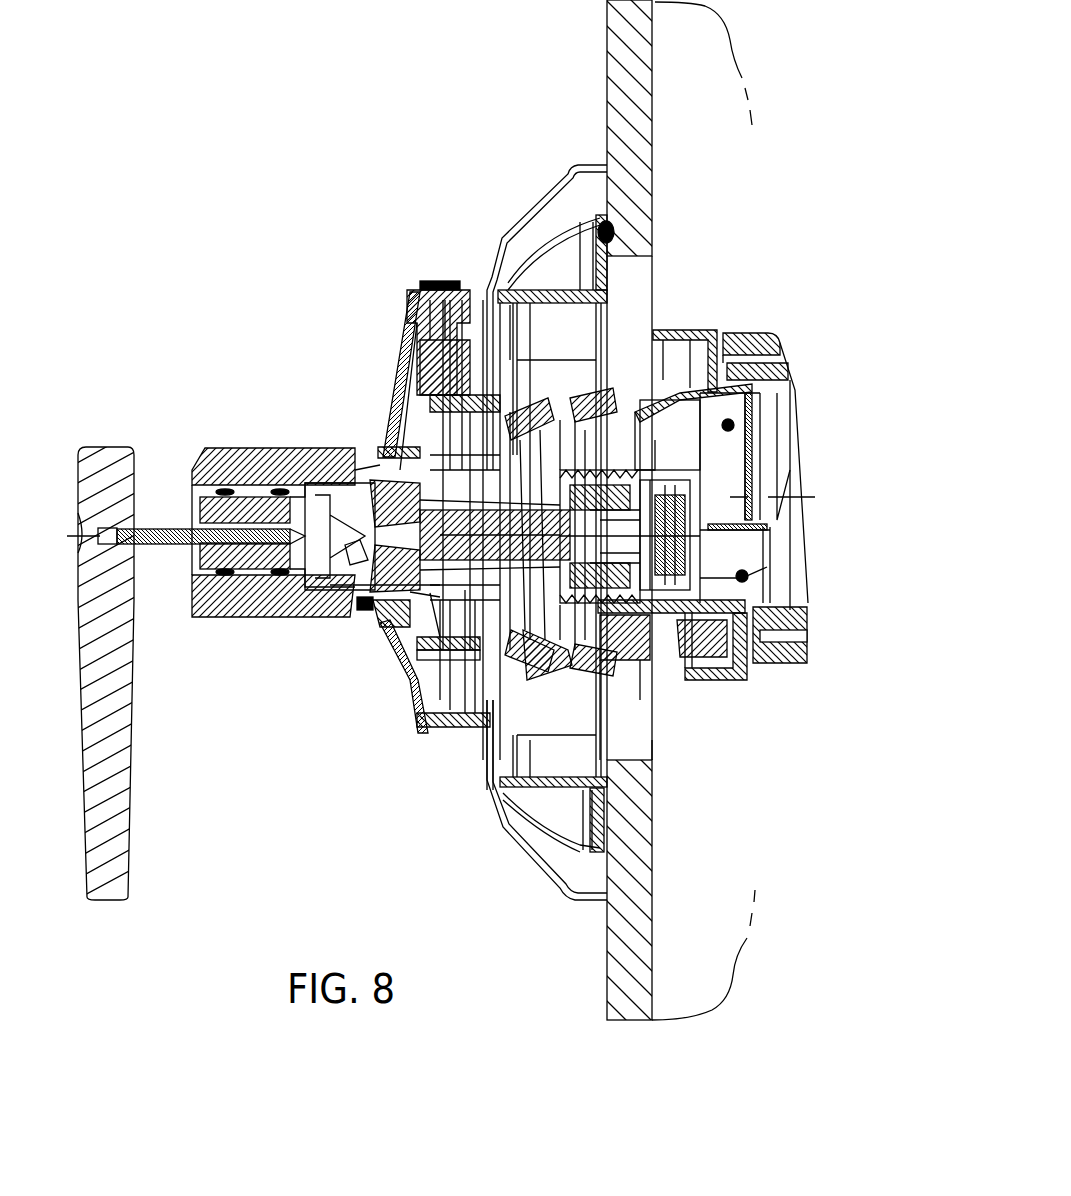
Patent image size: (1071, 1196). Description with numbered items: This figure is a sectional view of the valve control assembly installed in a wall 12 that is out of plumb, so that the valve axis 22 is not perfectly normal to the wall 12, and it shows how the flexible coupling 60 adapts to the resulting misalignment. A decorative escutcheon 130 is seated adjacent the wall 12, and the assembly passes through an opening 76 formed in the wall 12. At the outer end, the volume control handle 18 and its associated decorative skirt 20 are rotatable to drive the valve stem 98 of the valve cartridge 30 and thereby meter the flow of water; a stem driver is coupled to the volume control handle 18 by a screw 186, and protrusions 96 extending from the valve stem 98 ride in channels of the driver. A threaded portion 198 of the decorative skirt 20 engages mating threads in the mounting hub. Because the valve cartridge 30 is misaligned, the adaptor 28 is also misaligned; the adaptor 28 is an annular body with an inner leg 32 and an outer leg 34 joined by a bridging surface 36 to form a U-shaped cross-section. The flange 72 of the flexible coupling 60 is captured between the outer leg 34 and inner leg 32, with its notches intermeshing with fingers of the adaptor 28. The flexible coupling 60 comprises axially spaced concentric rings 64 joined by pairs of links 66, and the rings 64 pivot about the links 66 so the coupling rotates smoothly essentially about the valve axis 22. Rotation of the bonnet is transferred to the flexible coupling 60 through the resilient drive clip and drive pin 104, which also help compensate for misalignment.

The wall 12 is at (605, 36).
The volume control handle 18 is at (135, 716).
The decorative skirt 20 is at (290, 448).
The valve axis 22 is at (808, 492).
The adaptor 28 is at (662, 612).
The valve cartridge 30 is at (563, 425).
The inner leg 32 is at (690, 380).
The outer leg 34 is at (710, 657).
The bridging surface 36 is at (730, 330).
The flexible coupling 60 is at (577, 387).
The concentric rings 64 is at (402, 435).
The links 66 is at (613, 690).
The flange 72 is at (700, 672).
The opening 76 is at (652, 750).
The protrusions 96 is at (365, 500).
The valve stem 98 is at (365, 560).
The drive pin 104 is at (405, 675).
The decorative escutcheon 130 is at (548, 222).
The screw 186 is at (133, 524).
The threaded portion 198 is at (383, 632).